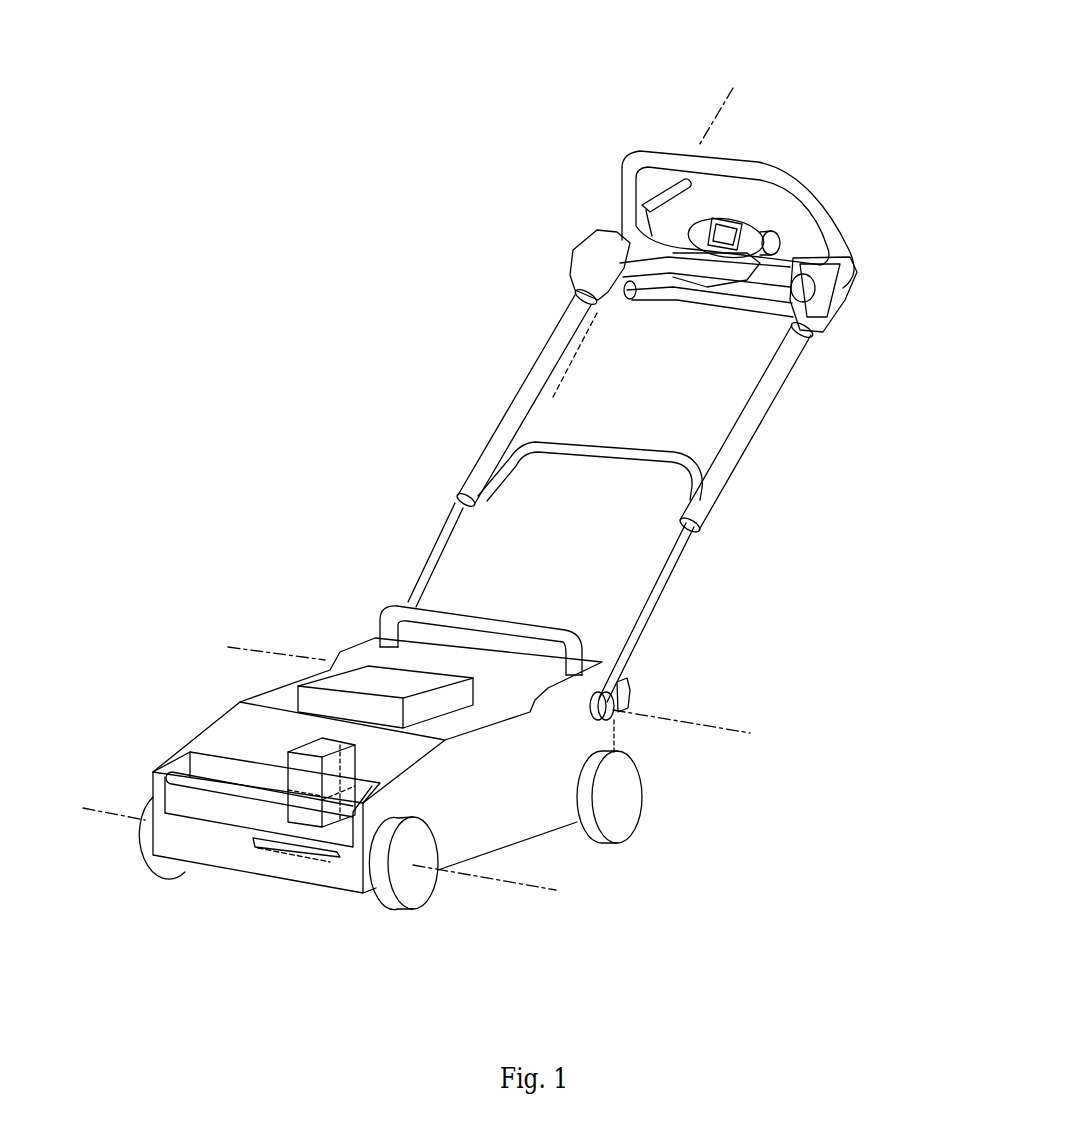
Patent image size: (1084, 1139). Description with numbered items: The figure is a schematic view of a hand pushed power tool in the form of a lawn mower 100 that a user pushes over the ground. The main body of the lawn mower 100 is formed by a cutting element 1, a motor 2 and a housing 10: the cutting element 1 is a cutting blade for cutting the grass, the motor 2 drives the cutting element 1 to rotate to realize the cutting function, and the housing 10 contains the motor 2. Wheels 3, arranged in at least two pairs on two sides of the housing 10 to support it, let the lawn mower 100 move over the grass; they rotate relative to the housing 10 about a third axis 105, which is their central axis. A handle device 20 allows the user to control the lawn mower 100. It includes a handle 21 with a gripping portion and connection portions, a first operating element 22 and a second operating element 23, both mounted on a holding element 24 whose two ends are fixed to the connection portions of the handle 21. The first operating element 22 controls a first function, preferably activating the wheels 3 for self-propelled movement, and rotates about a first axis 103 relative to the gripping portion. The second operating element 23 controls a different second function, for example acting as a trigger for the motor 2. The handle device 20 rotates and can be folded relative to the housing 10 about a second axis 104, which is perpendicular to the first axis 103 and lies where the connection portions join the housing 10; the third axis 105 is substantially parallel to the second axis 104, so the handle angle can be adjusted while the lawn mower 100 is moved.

The lawn mower 100 is at (456, 138).
The housing 10 is at (216, 726).
The handle device 20 is at (518, 349).
The handle 21 is at (683, 160).
The first operating element 22 is at (652, 194).
The second operating element 23 is at (834, 234).
The holding element 24 is at (858, 282).
The cutting element 1 is at (262, 846).
The motor 2 is at (323, 818).
The wheels 3 is at (624, 821).
The first axis 103 is at (716, 93).
The second axis 104 is at (236, 641).
The third axis 105 is at (490, 886).